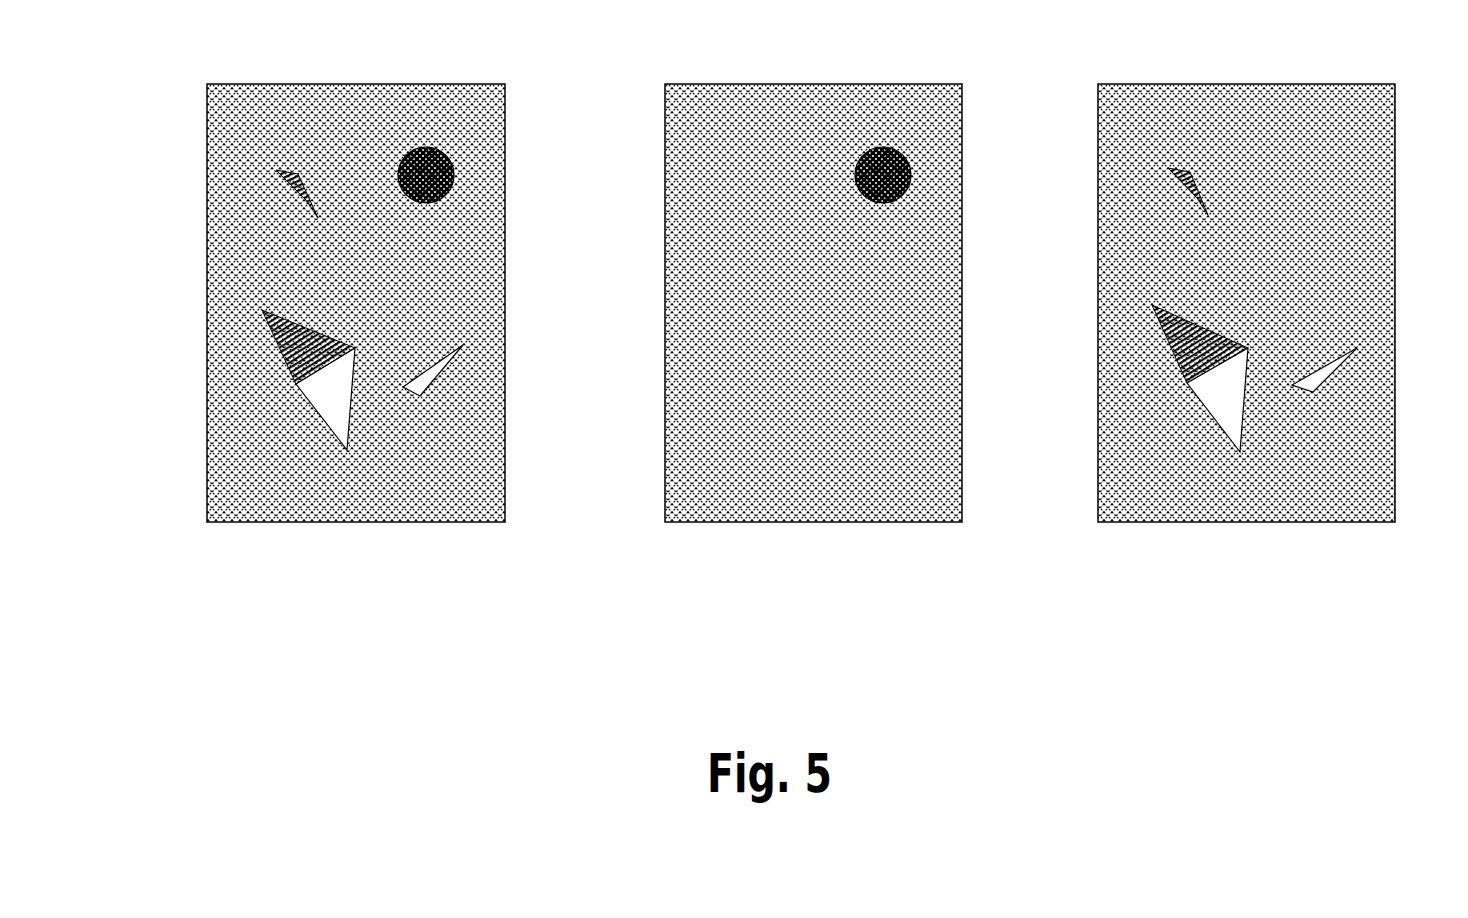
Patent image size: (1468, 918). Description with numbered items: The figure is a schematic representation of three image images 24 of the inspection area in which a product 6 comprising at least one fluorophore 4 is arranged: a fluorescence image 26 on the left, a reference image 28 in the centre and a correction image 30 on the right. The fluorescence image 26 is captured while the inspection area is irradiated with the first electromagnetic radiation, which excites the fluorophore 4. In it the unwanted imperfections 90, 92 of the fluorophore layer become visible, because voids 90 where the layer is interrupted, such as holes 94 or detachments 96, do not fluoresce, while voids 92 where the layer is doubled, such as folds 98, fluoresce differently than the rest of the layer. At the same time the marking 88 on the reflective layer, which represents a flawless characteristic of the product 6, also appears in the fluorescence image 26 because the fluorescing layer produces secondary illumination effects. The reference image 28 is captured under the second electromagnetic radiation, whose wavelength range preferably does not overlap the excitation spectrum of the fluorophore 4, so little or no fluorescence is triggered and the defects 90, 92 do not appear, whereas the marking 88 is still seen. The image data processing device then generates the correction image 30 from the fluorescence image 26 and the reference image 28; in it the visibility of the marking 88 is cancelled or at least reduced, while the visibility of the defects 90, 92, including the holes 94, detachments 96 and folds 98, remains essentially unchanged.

The fluorophore 4 is at (390, 505).
The product 6 is at (472, 522).
The image images 24 is at (584, 274).
The fluorescence image 26 is at (447, 72).
The reference image 28 is at (900, 72).
The correction image 30 is at (1365, 72).
The marking 88 is at (456, 172).
The imperfection 90 is at (672, 276).
The imperfection 92 is at (425, 382).
The hole 94 is at (278, 171).
The detachment 96 is at (264, 314).
The fold 98 is at (326, 400).